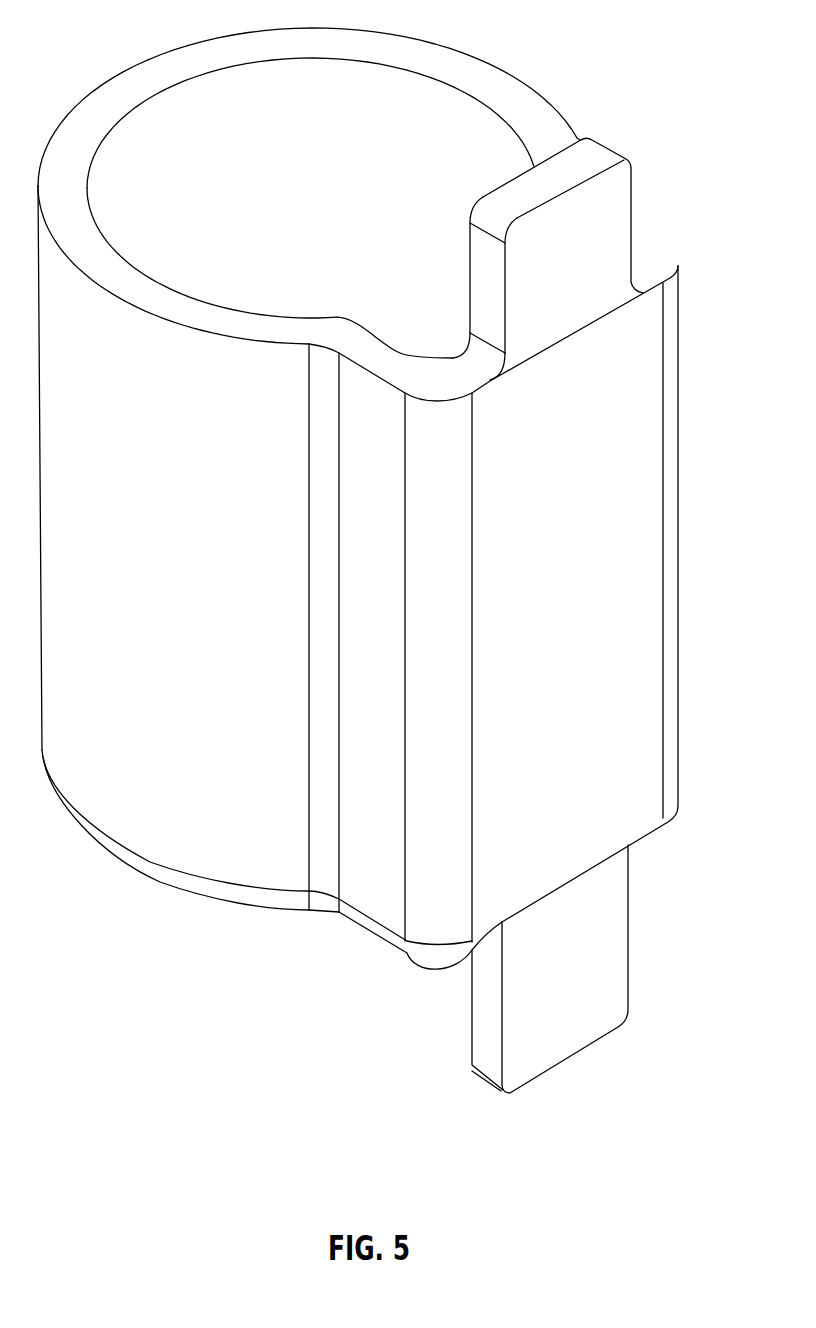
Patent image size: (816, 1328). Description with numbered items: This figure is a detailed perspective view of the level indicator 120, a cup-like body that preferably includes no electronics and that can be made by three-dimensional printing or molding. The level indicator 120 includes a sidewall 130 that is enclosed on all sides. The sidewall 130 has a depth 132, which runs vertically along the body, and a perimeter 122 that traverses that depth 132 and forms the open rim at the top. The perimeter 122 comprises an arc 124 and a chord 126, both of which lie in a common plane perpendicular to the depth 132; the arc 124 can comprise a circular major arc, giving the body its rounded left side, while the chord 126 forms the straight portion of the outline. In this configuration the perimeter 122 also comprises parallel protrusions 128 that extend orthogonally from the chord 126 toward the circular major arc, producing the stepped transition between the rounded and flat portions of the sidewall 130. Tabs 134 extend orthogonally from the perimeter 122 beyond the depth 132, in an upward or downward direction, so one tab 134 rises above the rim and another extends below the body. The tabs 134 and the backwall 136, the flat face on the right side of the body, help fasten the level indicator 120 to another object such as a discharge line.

The level indicator 120 is at (640, 138).
The perimeter 122 is at (145, 80).
The arc 124 is at (237, 883).
The chord 126 is at (567, 878).
The parallel protrusions 128 is at (383, 920).
The sidewall 130 is at (190, 577).
The depth 132 is at (473, 543).
The tabs 134 is at (589, 282).
The backwall 136 is at (601, 655).